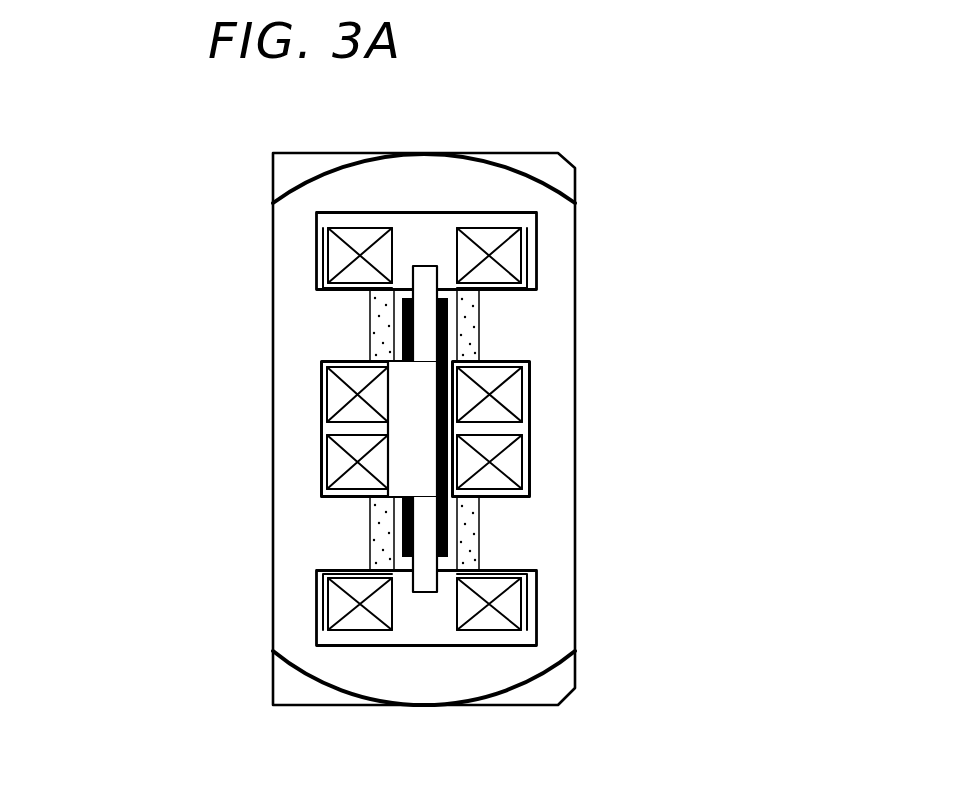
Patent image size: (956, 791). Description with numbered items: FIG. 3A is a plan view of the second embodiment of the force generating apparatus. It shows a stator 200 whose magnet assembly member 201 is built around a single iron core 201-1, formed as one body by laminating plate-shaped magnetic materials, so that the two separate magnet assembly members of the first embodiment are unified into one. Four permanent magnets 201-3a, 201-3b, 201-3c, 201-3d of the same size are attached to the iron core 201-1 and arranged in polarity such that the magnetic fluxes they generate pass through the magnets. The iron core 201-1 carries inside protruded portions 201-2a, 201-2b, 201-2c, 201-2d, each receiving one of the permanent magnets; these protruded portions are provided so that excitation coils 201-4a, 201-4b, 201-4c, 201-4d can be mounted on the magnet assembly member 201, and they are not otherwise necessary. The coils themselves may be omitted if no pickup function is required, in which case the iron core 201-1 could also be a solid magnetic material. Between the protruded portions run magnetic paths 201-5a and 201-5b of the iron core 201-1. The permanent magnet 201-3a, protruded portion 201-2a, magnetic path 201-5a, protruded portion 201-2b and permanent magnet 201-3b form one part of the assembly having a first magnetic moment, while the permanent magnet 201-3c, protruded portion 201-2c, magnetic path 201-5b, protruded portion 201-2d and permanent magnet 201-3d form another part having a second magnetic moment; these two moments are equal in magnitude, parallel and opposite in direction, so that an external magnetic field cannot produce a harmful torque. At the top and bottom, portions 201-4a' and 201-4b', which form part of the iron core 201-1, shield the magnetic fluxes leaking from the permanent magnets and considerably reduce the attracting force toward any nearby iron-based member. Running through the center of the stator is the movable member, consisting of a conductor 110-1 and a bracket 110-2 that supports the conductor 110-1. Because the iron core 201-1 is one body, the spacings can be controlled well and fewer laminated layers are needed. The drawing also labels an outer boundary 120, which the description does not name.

The housing 120 is at (541, 152).
The stator 200 is at (525, 190).
The magnet assembly member 201 is at (555, 189).
The iron core 201-1 is at (558, 226).
The protruded portion 201-2a is at (325, 332).
The protruded portion 201-2b is at (347, 545).
The protruded portion 201-2c is at (522, 345).
The protruded portion 201-2d is at (498, 532).
The permanent magnet 201-3a is at (370, 308).
The permanent magnet 201-3b is at (372, 549).
The permanent magnet 201-3c is at (479, 328).
The permanent magnet 201-3d is at (472, 549).
The excitation coil 201-4a is at (245, 220).
The flux shielding portion of iron core 201-4a' is at (424, 147).
The excitation coil 201-4b is at (248, 665).
The flux shielding portion of iron core 201-4b' is at (424, 702).
The excitation coil 201-4c is at (512, 263).
The excitation coil 201-4d is at (513, 607).
The magnetic path 201-5a is at (287, 405).
The magnetic path 201-5b is at (553, 428).
The conductor 110-1 is at (447, 590).
The bracket 110-2 is at (403, 469).